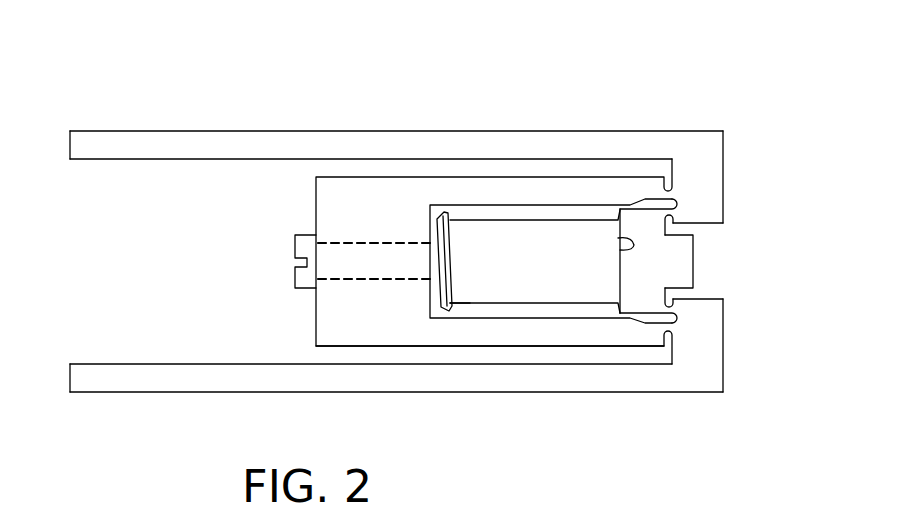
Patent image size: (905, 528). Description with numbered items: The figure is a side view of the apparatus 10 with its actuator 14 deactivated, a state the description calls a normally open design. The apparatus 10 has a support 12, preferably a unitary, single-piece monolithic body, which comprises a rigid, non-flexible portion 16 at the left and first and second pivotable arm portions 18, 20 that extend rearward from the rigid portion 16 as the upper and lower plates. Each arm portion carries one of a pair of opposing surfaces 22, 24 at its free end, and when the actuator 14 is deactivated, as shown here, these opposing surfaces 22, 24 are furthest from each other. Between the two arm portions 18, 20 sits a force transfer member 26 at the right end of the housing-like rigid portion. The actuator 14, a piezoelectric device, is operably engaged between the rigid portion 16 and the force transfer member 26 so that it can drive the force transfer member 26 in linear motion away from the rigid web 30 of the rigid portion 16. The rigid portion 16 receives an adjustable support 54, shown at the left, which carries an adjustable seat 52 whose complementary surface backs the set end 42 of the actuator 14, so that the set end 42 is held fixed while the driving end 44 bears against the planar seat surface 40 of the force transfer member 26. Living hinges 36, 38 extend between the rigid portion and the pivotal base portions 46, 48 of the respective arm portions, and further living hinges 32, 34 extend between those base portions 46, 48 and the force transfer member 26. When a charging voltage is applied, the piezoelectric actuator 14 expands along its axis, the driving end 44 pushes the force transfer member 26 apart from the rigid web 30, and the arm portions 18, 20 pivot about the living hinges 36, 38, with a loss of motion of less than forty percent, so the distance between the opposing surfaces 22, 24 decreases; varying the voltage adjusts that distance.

The apparatus 10 is at (353, 80).
The support 12 is at (442, 165).
The actuator 14 is at (529, 291).
The rigid, non-flexible portion 16 is at (327, 203).
The first pivotable arm portion 18 is at (182, 137).
The second pivotable arm portion 20 is at (203, 385).
The opposing surface 22 is at (112, 161).
The opposing surface 24 is at (101, 364).
The force transfer member 26 is at (697, 256).
The rigid web 30 is at (327, 333).
The living hinge 32 is at (676, 213).
The living hinge 34 is at (677, 313).
The living hinge 36 is at (675, 212).
The living hinge 38 is at (673, 330).
The planar seat surface 40 is at (608, 279).
The set end 42 is at (447, 257).
The driving end 44 is at (618, 243).
The pivotal base portion 46 is at (703, 219).
The pivotal base portion 48 is at (708, 315).
The adjustable seat 52 is at (455, 290).
The adjustable support 54 is at (296, 282).